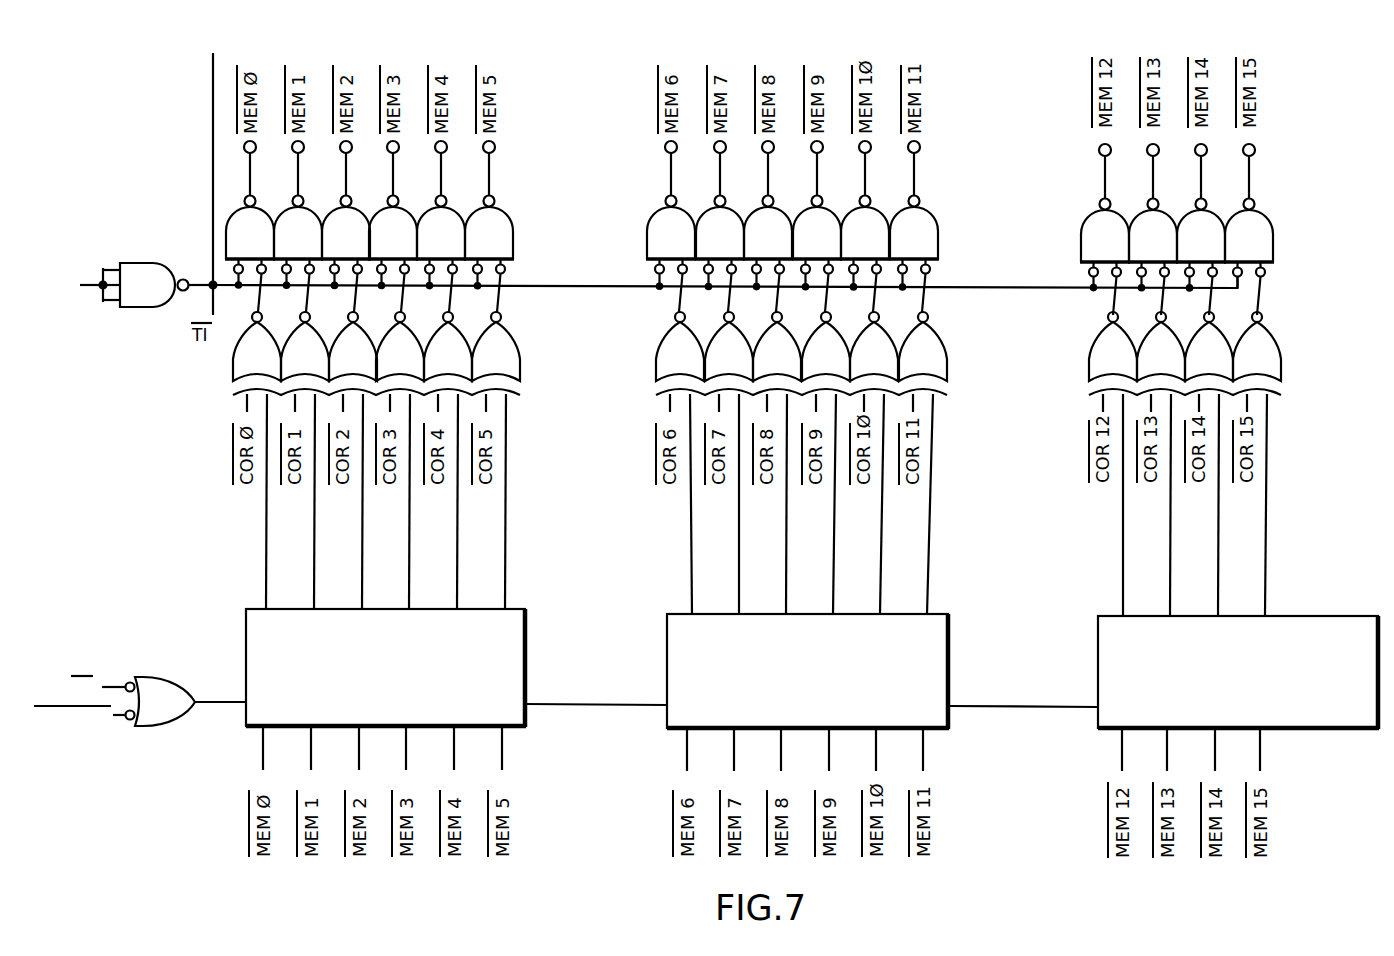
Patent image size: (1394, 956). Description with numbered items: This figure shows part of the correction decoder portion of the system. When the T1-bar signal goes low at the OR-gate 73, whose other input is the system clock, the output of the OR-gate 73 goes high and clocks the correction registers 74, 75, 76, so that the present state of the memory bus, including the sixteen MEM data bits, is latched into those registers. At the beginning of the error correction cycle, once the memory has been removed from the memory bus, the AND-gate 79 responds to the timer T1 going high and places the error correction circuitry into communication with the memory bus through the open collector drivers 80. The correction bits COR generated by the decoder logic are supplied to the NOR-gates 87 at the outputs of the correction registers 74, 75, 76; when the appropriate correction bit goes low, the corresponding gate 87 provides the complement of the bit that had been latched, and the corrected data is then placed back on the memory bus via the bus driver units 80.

The OR-gate 73 is at (160, 677).
The correction register 74 is at (398, 679).
The correction register 75 is at (801, 678).
The correction register 76 is at (1222, 682).
The AND-gate 79 is at (143, 268).
The open collector drivers 80 is at (634, 232).
The NOR-gates 87 is at (640, 344).